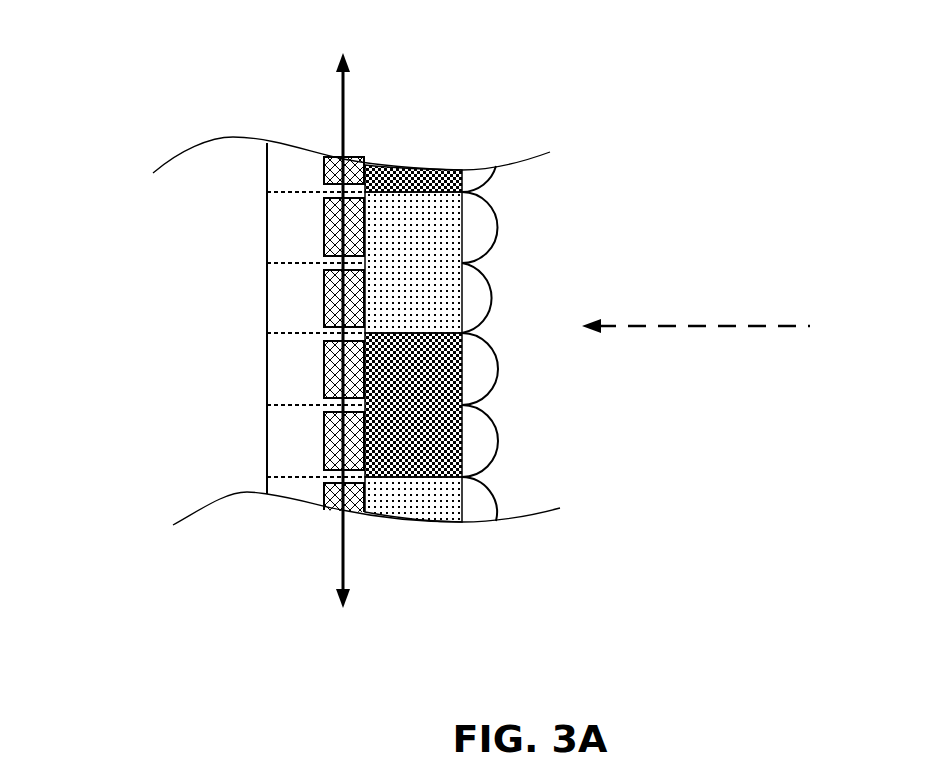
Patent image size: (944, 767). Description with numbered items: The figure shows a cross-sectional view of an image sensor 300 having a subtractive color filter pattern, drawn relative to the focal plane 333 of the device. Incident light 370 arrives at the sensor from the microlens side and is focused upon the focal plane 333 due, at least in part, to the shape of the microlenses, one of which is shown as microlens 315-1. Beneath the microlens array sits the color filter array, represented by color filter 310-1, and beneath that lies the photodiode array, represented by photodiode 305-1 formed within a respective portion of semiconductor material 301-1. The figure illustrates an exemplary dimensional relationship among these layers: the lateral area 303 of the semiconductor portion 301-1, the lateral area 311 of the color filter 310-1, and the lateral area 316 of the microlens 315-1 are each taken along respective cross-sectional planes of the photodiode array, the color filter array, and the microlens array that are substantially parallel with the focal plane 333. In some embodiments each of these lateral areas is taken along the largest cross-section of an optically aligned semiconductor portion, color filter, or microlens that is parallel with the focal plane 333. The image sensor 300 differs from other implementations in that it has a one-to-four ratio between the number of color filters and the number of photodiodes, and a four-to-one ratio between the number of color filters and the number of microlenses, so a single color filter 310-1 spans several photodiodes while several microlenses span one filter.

The image sensor 300 is at (73, 19).
The portion of semiconductor material 301-1 is at (267, 192).
The lateral area of semiconductor portion 303 is at (287, 203).
The photodiode 305-1 is at (324, 204).
The color filter 310-1 is at (436, 192).
The lateral area of color filter 311 is at (412, 204).
The microlens 315-1 is at (496, 208).
The lateral area of microlens 316 is at (461, 204).
The focal plane 333 is at (341, 316).
The incident light 370 is at (696, 299).